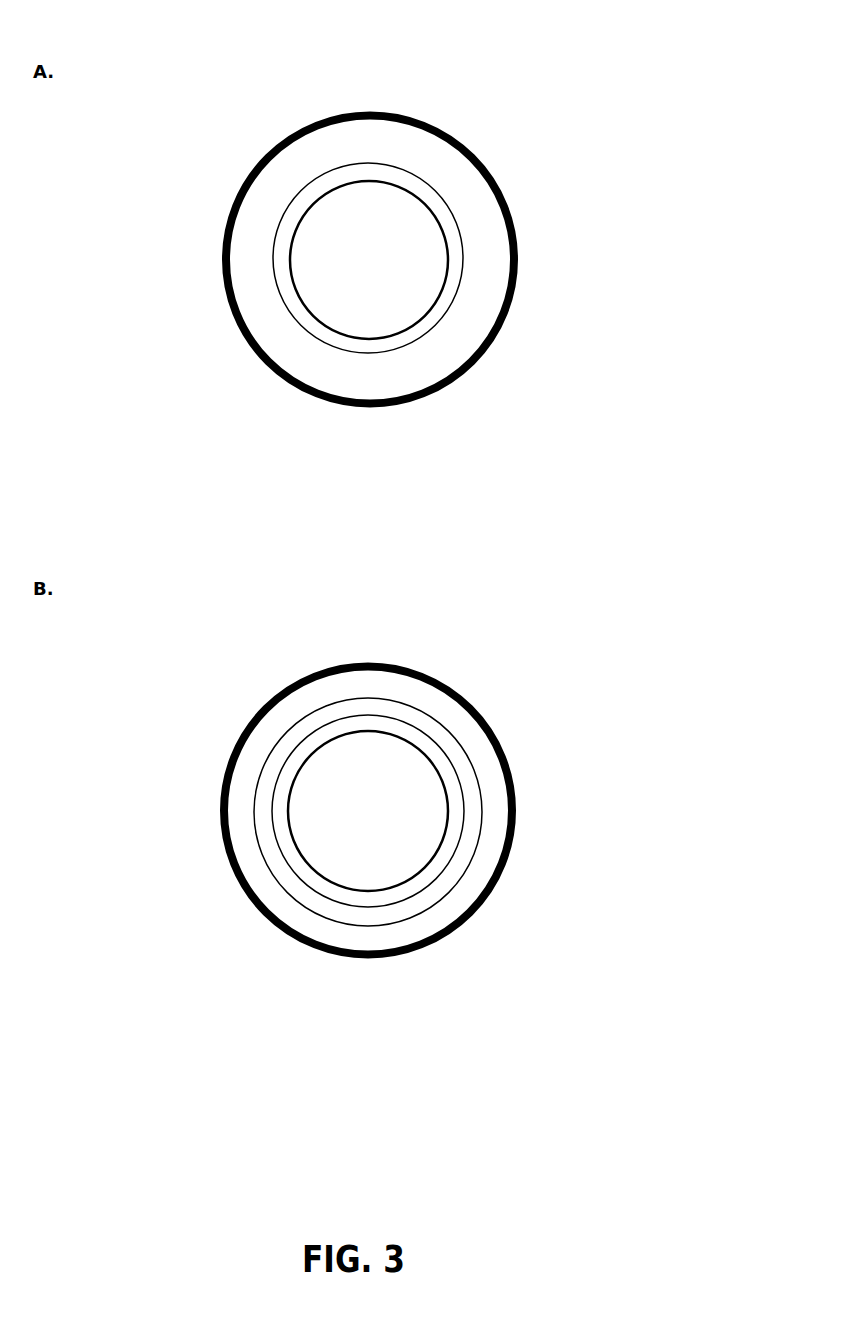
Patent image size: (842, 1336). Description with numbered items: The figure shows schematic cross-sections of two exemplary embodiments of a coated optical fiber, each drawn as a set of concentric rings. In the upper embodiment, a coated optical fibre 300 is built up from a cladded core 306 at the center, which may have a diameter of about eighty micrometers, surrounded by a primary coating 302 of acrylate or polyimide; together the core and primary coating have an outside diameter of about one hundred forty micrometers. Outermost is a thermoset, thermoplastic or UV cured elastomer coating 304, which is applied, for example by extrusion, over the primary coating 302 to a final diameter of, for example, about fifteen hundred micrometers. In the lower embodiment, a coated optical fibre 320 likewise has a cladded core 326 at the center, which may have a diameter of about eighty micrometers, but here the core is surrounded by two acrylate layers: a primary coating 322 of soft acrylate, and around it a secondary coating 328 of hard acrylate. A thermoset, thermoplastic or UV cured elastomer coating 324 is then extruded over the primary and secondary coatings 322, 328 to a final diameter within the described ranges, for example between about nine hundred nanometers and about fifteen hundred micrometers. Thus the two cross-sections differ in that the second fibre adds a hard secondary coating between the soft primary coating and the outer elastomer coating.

The coated optical fibre 300 is at (356, 288).
The primary coating 302 is at (261, 290).
The elastomer coating 304 is at (268, 381).
The cladded core 306 is at (421, 332).
The coated optical fibre 320 is at (357, 851).
The primary coating 322 is at (258, 843).
The elastomer coating 324 is at (295, 957).
The cladded core 326 is at (441, 861).
The secondary coating 328 is at (252, 765).